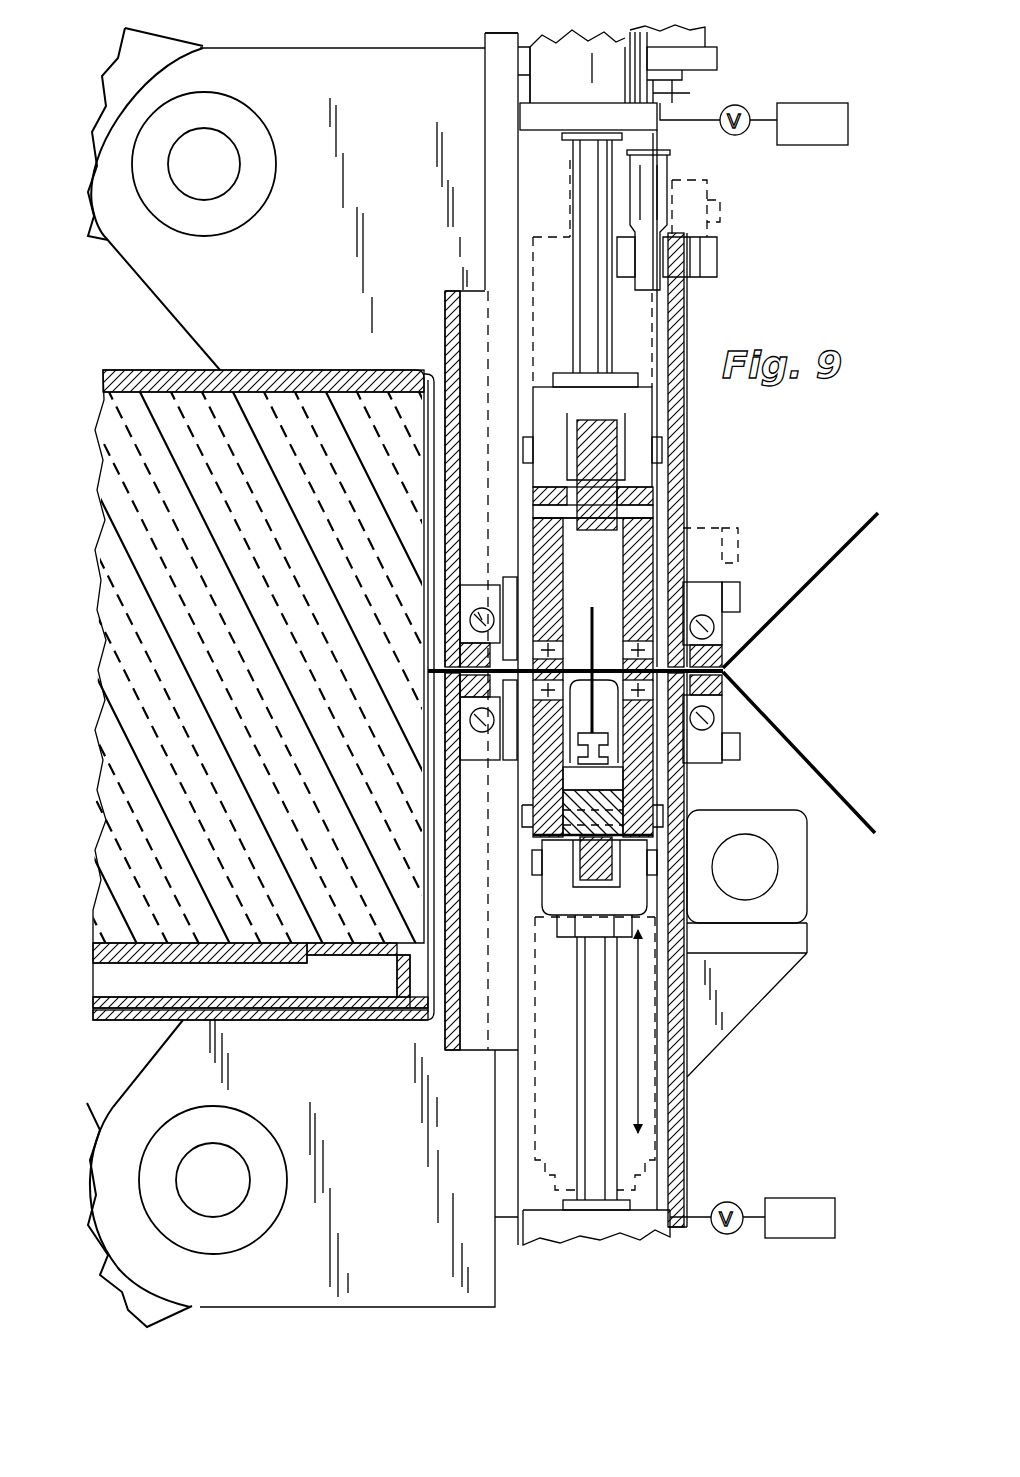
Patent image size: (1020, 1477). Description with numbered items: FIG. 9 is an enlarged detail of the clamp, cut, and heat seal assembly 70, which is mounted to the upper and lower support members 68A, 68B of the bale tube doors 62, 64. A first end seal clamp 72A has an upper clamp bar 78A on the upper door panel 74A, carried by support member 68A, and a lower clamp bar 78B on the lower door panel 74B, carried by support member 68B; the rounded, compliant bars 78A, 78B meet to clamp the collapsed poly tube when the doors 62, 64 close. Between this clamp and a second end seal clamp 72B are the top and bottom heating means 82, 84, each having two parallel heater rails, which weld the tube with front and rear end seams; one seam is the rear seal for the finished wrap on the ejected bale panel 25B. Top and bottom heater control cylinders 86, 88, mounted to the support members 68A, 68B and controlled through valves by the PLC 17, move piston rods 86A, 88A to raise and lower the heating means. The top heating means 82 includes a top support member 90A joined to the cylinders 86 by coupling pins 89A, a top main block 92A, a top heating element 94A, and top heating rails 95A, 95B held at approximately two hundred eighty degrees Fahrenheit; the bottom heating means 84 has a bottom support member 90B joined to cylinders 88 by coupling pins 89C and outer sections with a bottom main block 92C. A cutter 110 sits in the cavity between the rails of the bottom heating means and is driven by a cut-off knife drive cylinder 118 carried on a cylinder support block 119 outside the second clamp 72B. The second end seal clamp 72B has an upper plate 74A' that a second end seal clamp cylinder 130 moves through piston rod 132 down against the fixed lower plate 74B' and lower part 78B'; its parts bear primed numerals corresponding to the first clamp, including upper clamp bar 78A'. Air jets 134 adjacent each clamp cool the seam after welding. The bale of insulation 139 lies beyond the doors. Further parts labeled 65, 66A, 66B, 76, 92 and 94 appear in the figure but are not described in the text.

The PLC 17 is at (805, 103).
The ejected bale panel 25B is at (812, 600).
The upper bale tube door 62 is at (450, 48).
The lower bale tube door 64 is at (508, 1270).
The roller shaft 65 is at (222, 142).
The upper roller 66A is at (150, 44).
The lower roller 66B is at (138, 1302).
The upper door support member 68A is at (346, 62).
The lower door support member 68B is at (420, 1280).
The clamp, cut, and heat seal assembly 70 is at (815, 266).
The first end seal clamp 72A is at (424, 667).
The second end seal clamp 72B is at (748, 657).
The upper door panel 74A is at (439, 479).
The upper plate 74A' is at (709, 398).
The lower door panel 74B is at (445, 861).
The lower plate 74B' is at (719, 950).
The sensor 76 is at (668, 177).
The upper clamp bar 78A is at (433, 626).
The upper right clamp 78A' is at (742, 622).
The lower clamp bar 78B is at (441, 717).
The lower part 78B' is at (752, 719).
The top heating means 82 is at (658, 541).
The bottom heating means 84 is at (668, 798).
The top heater control cylinder 86 is at (604, 44).
The piston rod 86A is at (573, 198).
The bottom heater control cylinder 88 is at (622, 1240).
The piston rod 88A is at (577, 1062).
The coupling pin 89A is at (628, 443).
The coupling pin 89C is at (640, 839).
The top support member 90A is at (650, 400).
The bottom support member 90B is at (625, 904).
The piston head 92 is at (563, 804).
The top main block 92A is at (600, 463).
The bottom main block 92C is at (740, 746).
The piston plate 94 is at (590, 778).
The top heating element 94A is at (612, 478).
The top heating rail 95A is at (740, 547).
The top heating rail 95B is at (530, 550).
The cutter 110 is at (602, 718).
The cut-off knife drive cylinder 118 is at (790, 892).
The cylinder support block 119 is at (735, 1006).
The second end seal clamp cylinder 130 is at (719, 56).
The piston rod 132 is at (690, 93).
The air jets 134 is at (469, 618).
The bale of insulation 139 is at (170, 783).